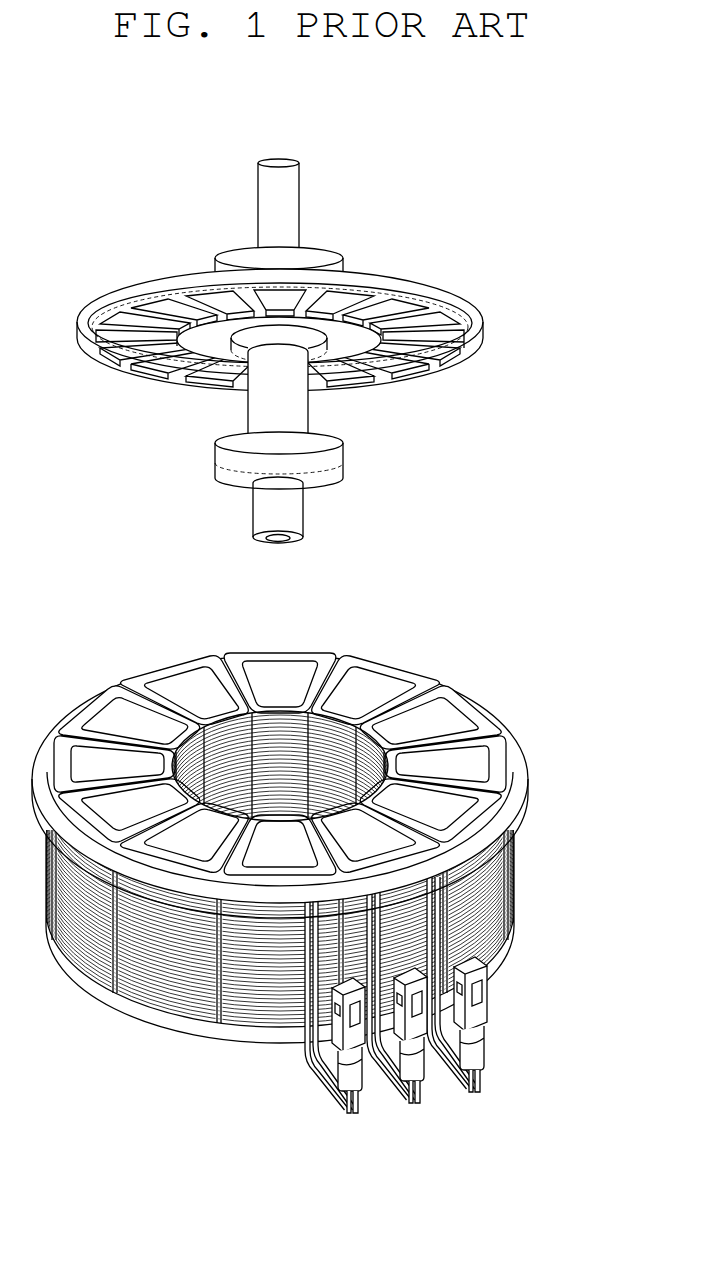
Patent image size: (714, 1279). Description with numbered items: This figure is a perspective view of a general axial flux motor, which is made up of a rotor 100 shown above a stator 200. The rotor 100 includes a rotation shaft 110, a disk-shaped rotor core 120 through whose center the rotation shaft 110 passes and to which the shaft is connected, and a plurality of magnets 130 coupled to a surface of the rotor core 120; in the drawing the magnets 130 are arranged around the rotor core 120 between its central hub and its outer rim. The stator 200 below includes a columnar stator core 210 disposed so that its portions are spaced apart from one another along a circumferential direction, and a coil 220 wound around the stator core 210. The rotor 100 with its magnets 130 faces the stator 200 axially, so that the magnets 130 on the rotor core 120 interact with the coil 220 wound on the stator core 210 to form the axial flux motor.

The rotor 100 is at (263, 322).
The rotation shaft 110 is at (279, 215).
The rotor core 120 is at (100, 300).
The magnets 130 is at (130, 380).
The stator 200 is at (320, 853).
The stator core 210 is at (375, 685).
The coil 220 is at (467, 710).